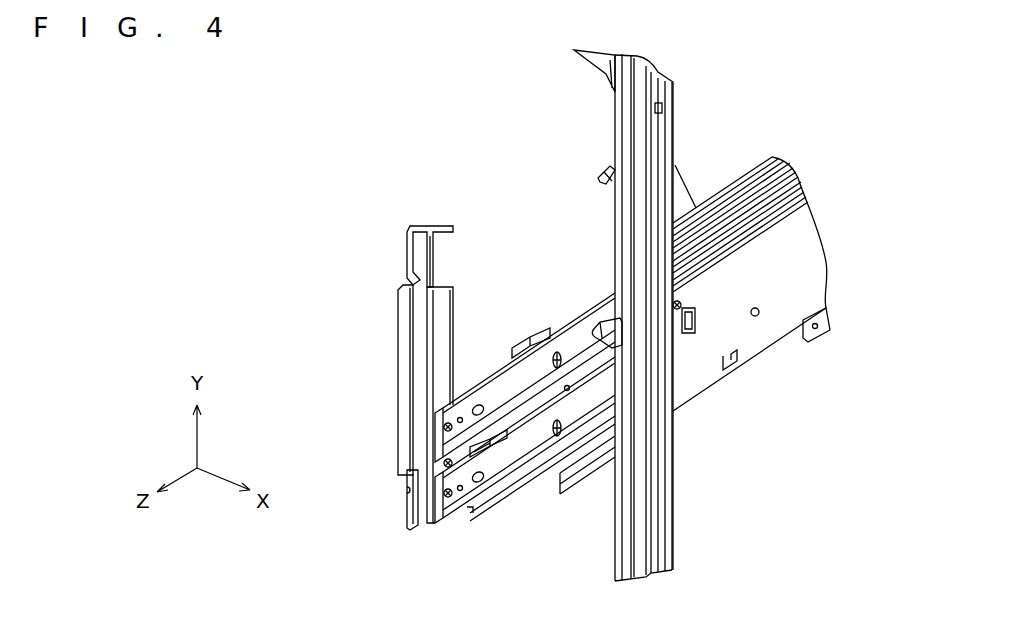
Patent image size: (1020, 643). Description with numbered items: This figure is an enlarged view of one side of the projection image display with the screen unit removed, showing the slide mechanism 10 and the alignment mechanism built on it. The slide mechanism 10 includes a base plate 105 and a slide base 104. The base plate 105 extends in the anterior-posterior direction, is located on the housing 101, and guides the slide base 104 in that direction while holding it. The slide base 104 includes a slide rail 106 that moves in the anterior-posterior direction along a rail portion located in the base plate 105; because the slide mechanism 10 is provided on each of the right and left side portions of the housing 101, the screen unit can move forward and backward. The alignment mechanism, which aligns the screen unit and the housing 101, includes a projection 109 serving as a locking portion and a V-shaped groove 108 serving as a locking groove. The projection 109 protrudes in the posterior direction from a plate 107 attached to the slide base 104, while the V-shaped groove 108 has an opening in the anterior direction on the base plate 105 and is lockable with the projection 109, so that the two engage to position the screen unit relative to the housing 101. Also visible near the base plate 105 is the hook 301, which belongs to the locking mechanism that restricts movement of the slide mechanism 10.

The slide mechanism 10 is at (390, 101).
The housing 101 is at (673, 498).
The slide base 104 is at (533, 450).
The base plate 105 is at (780, 313).
The slide rail 106 is at (492, 452).
The plate 107 is at (402, 335).
The V-shaped groove 108 is at (598, 177).
The projection 109 is at (437, 278).
The hook 301 is at (599, 332).